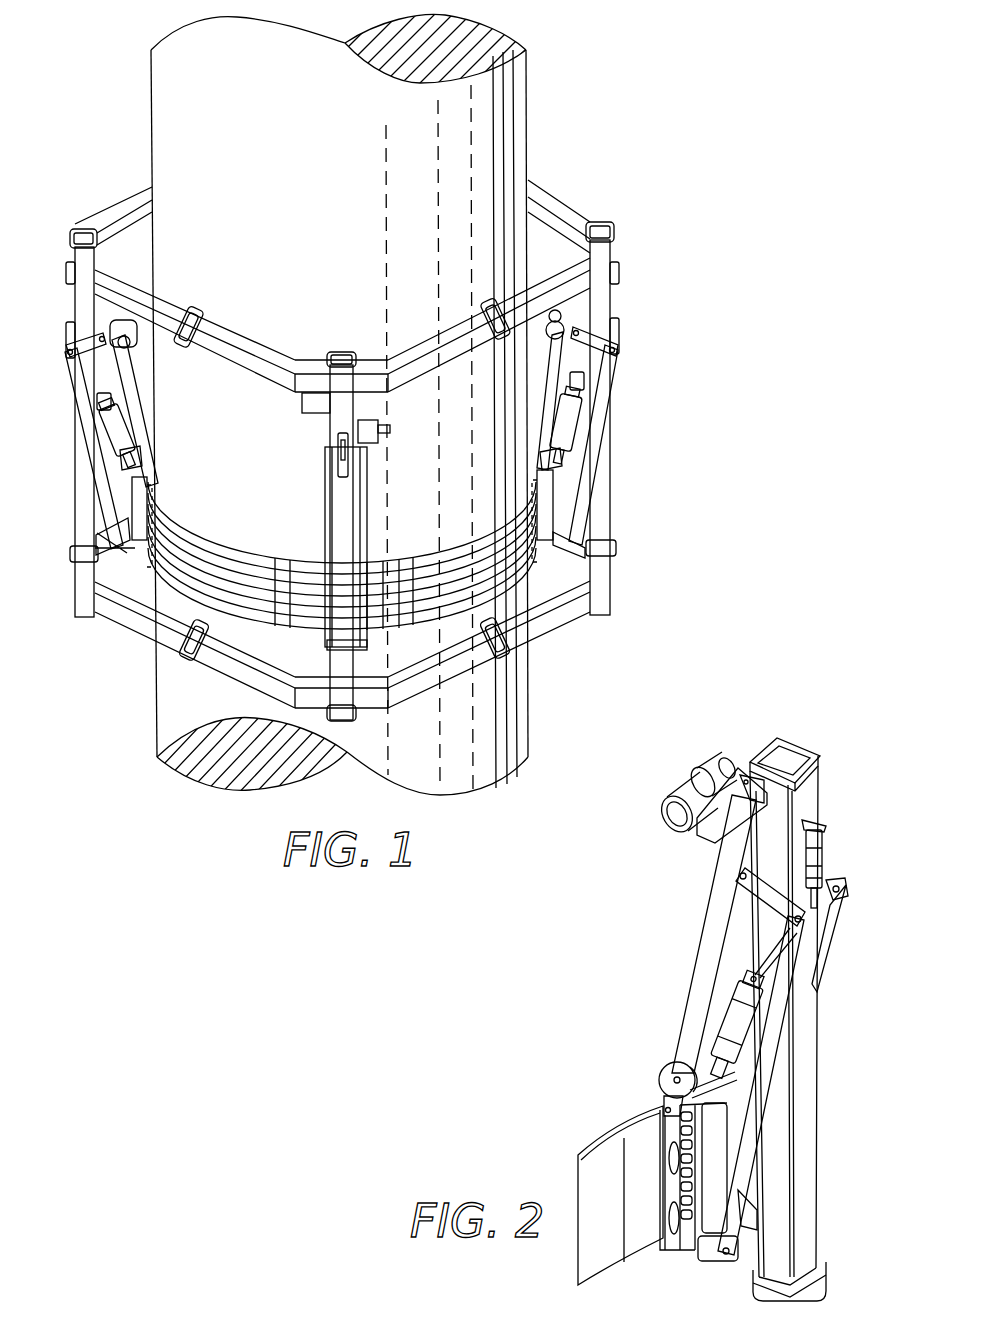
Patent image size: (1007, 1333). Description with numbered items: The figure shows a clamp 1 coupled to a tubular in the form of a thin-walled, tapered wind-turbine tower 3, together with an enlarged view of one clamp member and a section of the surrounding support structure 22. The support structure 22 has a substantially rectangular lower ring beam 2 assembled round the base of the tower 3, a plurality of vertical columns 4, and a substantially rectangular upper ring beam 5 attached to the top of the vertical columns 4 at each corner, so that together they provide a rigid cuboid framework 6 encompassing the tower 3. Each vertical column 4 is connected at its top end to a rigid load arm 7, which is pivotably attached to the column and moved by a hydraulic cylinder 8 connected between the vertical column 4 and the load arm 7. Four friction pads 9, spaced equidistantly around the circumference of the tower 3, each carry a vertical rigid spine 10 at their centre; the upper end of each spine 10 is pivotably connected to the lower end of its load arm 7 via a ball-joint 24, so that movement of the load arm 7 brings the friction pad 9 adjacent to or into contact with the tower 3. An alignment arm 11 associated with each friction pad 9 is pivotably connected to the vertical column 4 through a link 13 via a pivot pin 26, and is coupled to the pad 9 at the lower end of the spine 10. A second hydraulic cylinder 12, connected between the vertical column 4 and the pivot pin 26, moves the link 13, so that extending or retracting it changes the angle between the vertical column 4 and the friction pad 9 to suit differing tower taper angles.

In FIG. 1, the clamp 1 is at (640, 462).
In FIG. 1, the lower ring beam 2 is at (105, 612).
In FIG. 1, the wind-turbine tower 3 is at (165, 707).
In FIG. 1, the vertical column 4 is at (75, 455).
In FIG. 2, the vertical column 4 is at (808, 1094).
In FIG. 1, the upper ring beam 5 is at (76, 262).
In FIG. 1, the rigid cuboid framework 6 is at (612, 260).
In FIG. 1, the load arm 7 is at (562, 376).
In FIG. 2, the load arm 7 is at (711, 892).
In FIG. 1, the hydraulic cylinder 8 is at (120, 430).
In FIG. 2, the hydraulic cylinder 8 is at (716, 1013).
In FIG. 1, the friction pad 9 is at (163, 500).
In FIG. 2, the friction pad 9 is at (565, 1250).
In FIG. 2, the rigid spine 10 is at (720, 1188).
In FIG. 1, the alignment arm 11 is at (102, 512).
In FIG. 2, the alignment arm 11 is at (822, 955).
In FIG. 2, the second hydraulic cylinder 12 is at (828, 858).
In FIG. 2, the link 13 is at (777, 903).
In FIG. 1, the support structure 22 is at (645, 560).
In FIG. 2, the ball-joint 24 is at (660, 1112).
In FIG. 2, the pivot pin 26 is at (828, 914).